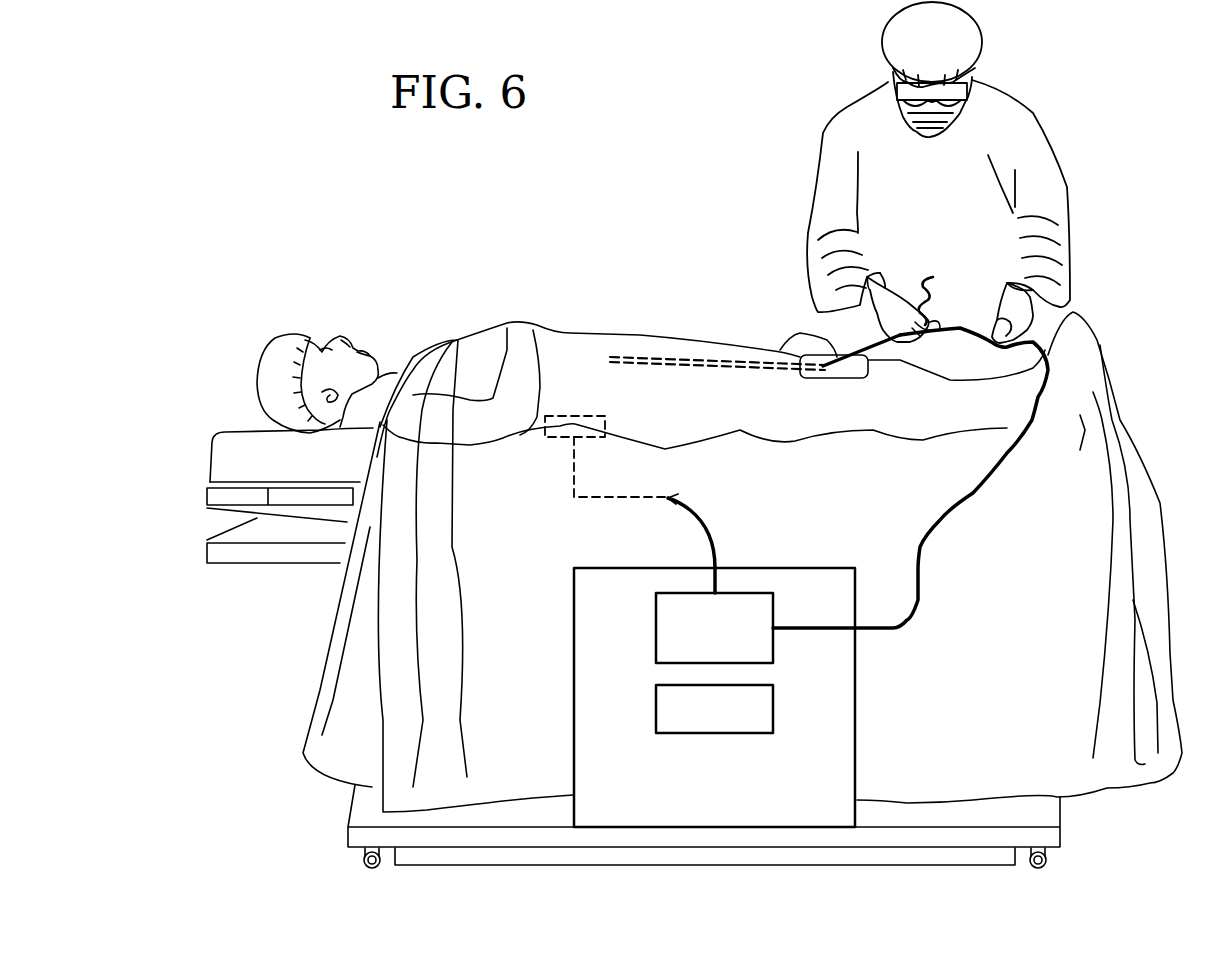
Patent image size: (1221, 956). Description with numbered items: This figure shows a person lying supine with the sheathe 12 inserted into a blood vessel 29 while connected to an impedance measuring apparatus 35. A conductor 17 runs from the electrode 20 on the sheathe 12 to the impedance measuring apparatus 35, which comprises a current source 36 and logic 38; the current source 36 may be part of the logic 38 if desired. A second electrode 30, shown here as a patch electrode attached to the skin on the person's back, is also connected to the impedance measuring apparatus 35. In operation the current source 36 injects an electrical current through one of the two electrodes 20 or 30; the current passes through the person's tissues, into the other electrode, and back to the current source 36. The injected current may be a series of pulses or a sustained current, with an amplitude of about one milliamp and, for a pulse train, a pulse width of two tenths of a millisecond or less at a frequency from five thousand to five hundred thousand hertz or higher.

The sheathe 12 is at (885, 345).
The conductor 17 is at (919, 583).
The electrode 20 is at (833, 360).
The blood vessel 29 is at (702, 357).
The second electrode 30 is at (562, 447).
The impedance measuring apparatus 35 is at (714, 660).
The current source 36 is at (656, 630).
The logic 38 is at (656, 707).